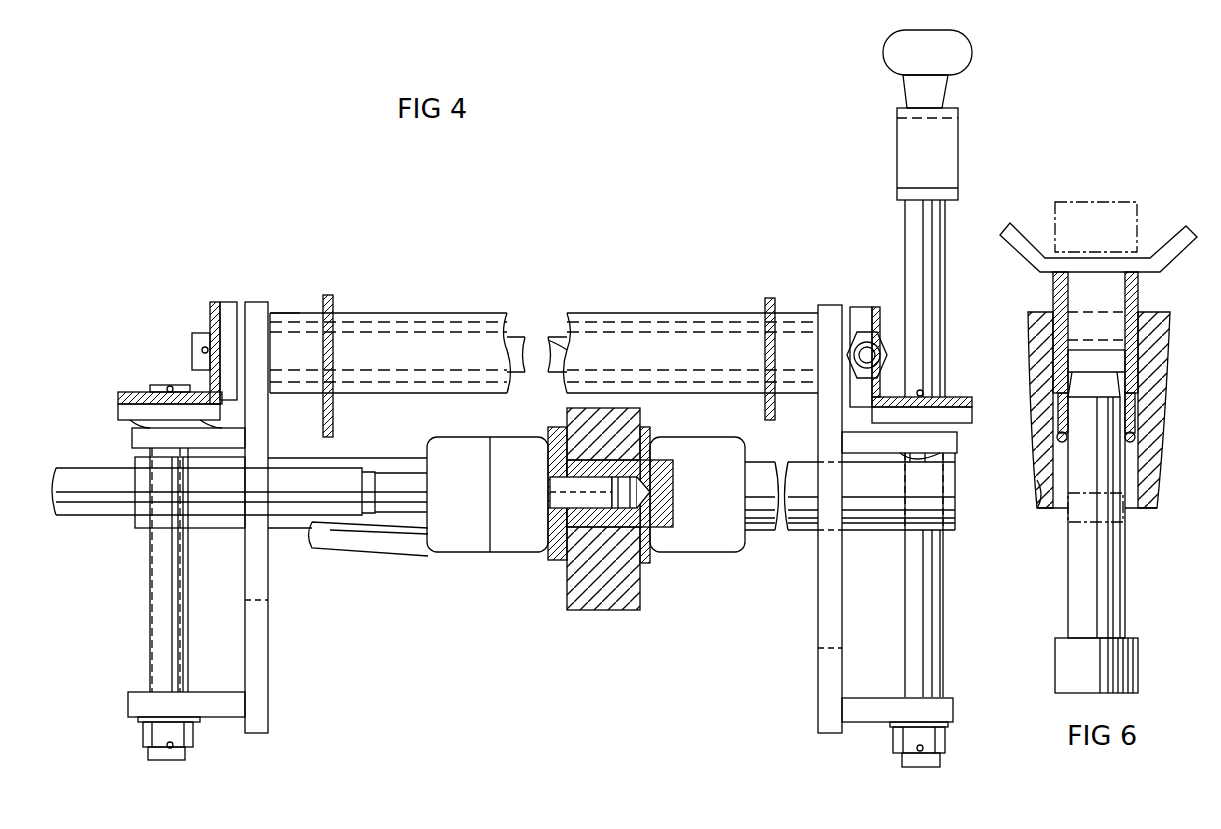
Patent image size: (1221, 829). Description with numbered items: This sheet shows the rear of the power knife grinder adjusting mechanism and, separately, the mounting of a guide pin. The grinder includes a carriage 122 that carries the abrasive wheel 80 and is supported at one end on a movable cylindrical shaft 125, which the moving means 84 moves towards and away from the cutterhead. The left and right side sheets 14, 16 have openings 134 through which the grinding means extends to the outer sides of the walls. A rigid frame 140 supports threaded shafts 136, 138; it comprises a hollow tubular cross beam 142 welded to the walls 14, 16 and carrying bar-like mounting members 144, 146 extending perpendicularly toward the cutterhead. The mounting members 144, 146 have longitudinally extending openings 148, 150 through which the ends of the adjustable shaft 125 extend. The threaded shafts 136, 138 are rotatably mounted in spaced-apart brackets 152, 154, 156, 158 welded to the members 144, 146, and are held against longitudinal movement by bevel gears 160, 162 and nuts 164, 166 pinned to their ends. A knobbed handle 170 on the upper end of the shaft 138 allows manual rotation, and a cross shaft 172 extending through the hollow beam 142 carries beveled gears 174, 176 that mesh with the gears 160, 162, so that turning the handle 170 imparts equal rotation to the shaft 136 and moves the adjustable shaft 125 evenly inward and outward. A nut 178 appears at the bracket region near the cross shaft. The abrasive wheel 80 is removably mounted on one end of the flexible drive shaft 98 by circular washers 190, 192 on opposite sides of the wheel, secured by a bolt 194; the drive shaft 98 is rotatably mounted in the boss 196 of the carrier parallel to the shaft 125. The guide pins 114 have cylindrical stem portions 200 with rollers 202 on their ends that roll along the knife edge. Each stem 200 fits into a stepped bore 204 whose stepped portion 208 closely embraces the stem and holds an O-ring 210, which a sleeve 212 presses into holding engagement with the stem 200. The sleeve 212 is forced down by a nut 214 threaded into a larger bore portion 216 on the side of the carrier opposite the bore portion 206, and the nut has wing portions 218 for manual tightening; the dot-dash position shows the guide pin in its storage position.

In FIG. 4, the left side sheet 14 is at (334, 300).
In FIG. 4, the right side sheet 16 is at (765, 302).
In FIG. 4, the abrasive wheel 80 is at (630, 595).
In FIG. 4, the moving means 84 is at (162, 338).
In FIG. 4, the flexible drive shaft 98 is at (560, 495).
In FIG. 6, the guide pins 114 is at (1132, 600).
In FIG. 4, the carriage 122 is at (712, 540).
In FIG. 4, the movable cylindrical shaft 125 is at (347, 455).
In FIG. 4, the openings 134 is at (326, 435).
In FIG. 4, the threaded shaft 136 is at (152, 588).
In FIG. 4, the threaded shaft 138 is at (908, 598).
In FIG. 4, the rigid frame 140 is at (292, 270).
In FIG. 4, the tubular cross beam 142 is at (302, 310).
In FIG. 4, the mounting member 144 is at (268, 612).
In FIG. 4, the mounting member 146 is at (818, 568).
In FIG. 4, the longitudinally extending opening 148 is at (262, 660).
In FIG. 4, the longitudinally extending opening 150 is at (818, 648).
In FIG. 4, the bracket 152 is at (132, 437).
In FIG. 4, the bracket 154 is at (135, 702).
In FIG. 4, the bracket 156 is at (952, 445).
In FIG. 4, the bracket 158 is at (952, 708).
In FIG. 4, the bevel gear 160 is at (120, 412).
In FIG. 4, the bevel gear 162 is at (992, 383).
In FIG. 4, the nut 164 is at (148, 735).
In FIG. 4, the nut 166 is at (948, 745).
In FIG. 4, the knobbed handle 170 is at (962, 65).
In FIG. 4, the cross shaft 172 is at (560, 340).
In FIG. 4, the beveled gear 174 is at (212, 310).
In FIG. 4, the beveled gear 176 is at (878, 305).
In FIG. 4, the nut 178 is at (858, 328).
In FIG. 4, the circular washer 190 is at (548, 430).
In FIG. 4, the circular washer 192 is at (650, 432).
In FIG. 4, the bolt 194 is at (662, 500).
In FIG. 4, the boss 196 is at (470, 535).
In FIG. 6, the cylindrical stem portion 200 is at (1075, 600).
In FIG. 6, the roller 202 is at (1140, 672).
In FIG. 6, the stepped bore 204 is at (1030, 340).
In FIG. 6, the bore portion 206 is at (1050, 490).
In FIG. 6, the stepped portion 208 is at (1137, 428).
In FIG. 6, the O-ring 210 is at (1150, 478).
In FIG. 6, the sleeve 212 is at (1133, 412).
In FIG. 6, the nut 214 is at (1197, 220).
In FIG. 6, the larger bore portion 216 is at (1028, 320).
In FIG. 6, the wing portions 218 is at (1020, 228).